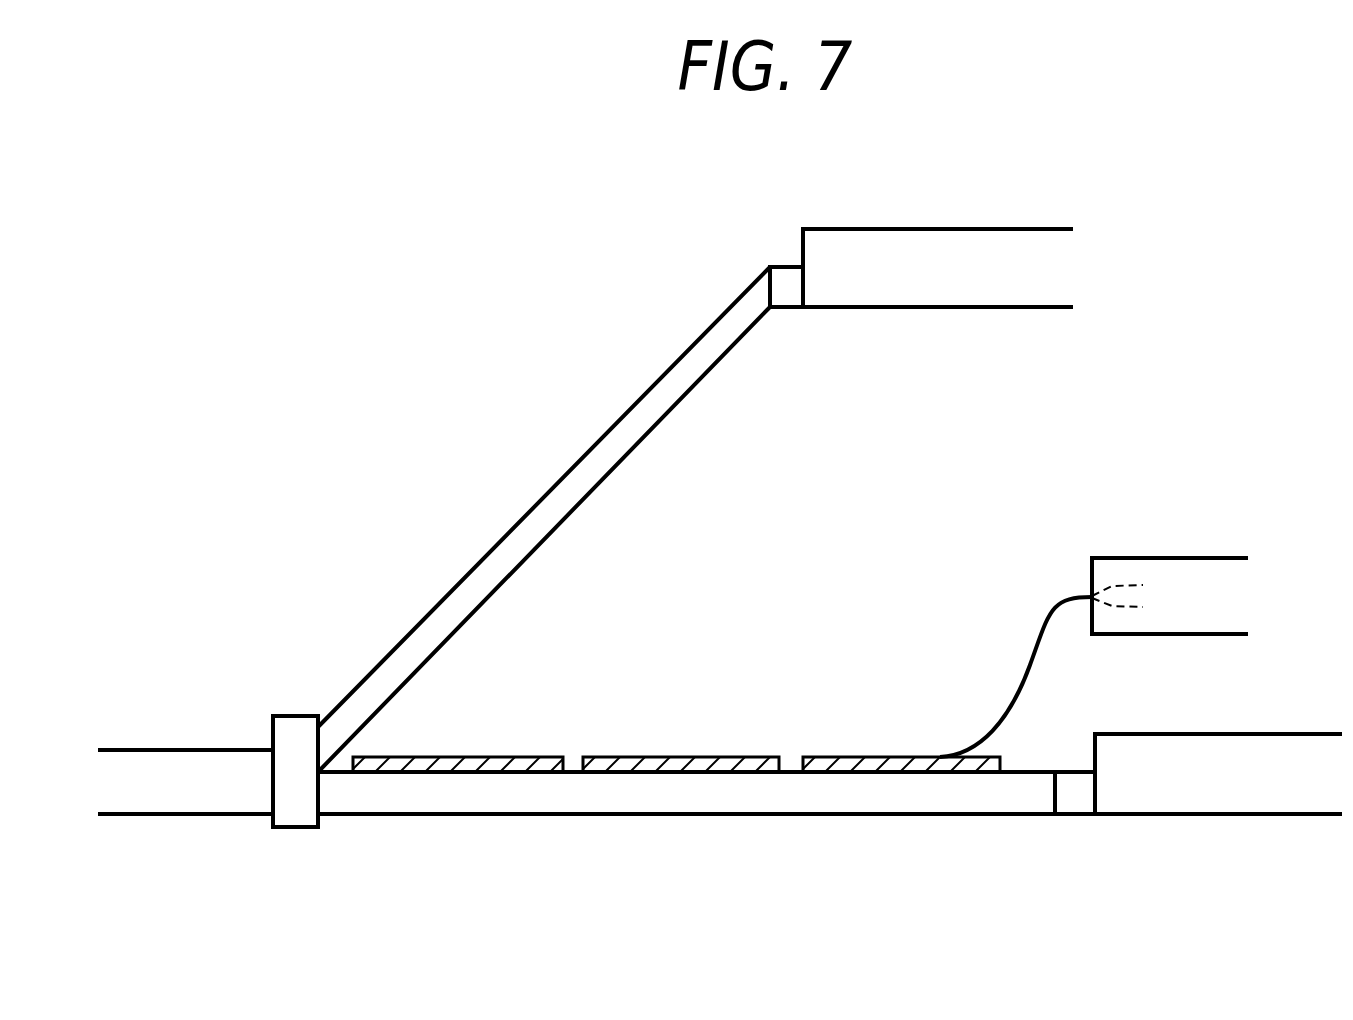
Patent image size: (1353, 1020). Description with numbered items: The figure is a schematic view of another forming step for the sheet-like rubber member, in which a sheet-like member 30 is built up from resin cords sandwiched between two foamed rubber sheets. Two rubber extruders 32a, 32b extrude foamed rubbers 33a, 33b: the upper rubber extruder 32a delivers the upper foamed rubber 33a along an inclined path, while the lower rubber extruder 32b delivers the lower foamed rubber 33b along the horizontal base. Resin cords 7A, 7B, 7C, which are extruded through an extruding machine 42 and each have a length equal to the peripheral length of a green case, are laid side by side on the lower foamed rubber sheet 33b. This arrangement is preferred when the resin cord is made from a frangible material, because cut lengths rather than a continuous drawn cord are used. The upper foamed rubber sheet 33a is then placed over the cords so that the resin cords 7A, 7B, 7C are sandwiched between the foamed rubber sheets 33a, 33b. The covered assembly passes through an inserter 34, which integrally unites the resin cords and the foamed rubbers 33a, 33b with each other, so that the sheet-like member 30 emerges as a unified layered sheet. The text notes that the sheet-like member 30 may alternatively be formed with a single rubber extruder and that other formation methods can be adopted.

The sheet-like member 30 is at (160, 762).
The inserter 34 is at (296, 735).
The foamed rubber 33a is at (622, 434).
The foamed rubber 33b is at (540, 793).
The rubber extruder 32a is at (967, 245).
The rubber extruder 32b is at (1247, 745).
The extruding machine 42 is at (1157, 572).
The resin cord 7A is at (478, 765).
The resin cord 7B is at (685, 757).
The resin cord 7C is at (880, 757).